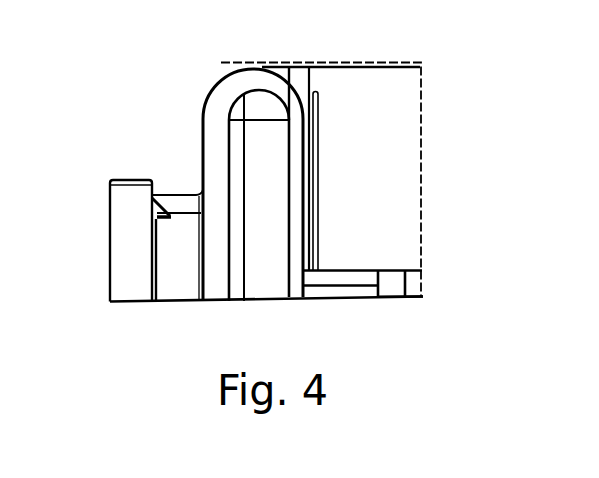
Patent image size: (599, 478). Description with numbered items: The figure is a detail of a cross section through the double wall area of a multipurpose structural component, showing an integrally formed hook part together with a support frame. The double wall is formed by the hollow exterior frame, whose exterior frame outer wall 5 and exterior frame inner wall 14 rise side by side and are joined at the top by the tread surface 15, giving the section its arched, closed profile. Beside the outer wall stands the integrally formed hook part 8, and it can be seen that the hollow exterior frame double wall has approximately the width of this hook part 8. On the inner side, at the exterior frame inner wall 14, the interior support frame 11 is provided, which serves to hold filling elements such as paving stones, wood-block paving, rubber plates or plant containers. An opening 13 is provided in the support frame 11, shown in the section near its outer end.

The exterior frame outer wall 5 is at (217, 134).
The hook part 8 is at (127, 247).
The support frame 11 is at (348, 279).
The opening 13 is at (391, 286).
The exterior frame inner wall 14 is at (297, 129).
The tread surface 15 is at (246, 78).